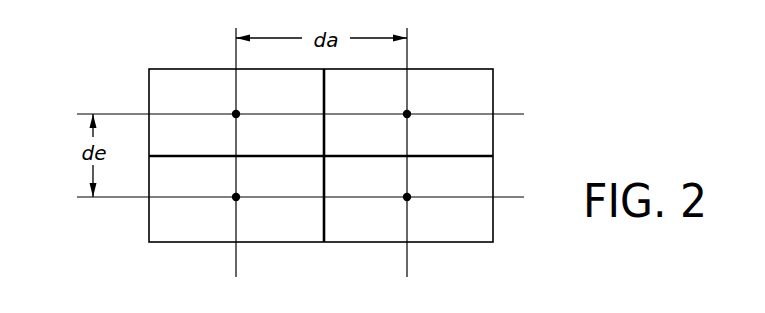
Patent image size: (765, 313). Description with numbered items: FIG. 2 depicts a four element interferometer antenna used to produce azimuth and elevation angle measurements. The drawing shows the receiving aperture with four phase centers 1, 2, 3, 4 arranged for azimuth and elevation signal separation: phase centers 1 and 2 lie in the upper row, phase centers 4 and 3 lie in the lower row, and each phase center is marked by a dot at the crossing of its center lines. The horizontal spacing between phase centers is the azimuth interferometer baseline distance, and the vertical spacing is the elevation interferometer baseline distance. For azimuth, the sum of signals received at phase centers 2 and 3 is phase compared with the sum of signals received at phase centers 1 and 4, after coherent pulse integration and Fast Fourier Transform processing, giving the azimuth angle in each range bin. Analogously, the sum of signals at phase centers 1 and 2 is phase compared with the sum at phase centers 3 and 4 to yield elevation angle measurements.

The phase center 1 is at (243, 104).
The phase center 2 is at (414, 104).
The phase center 3 is at (414, 187).
The phase center 4 is at (243, 187).